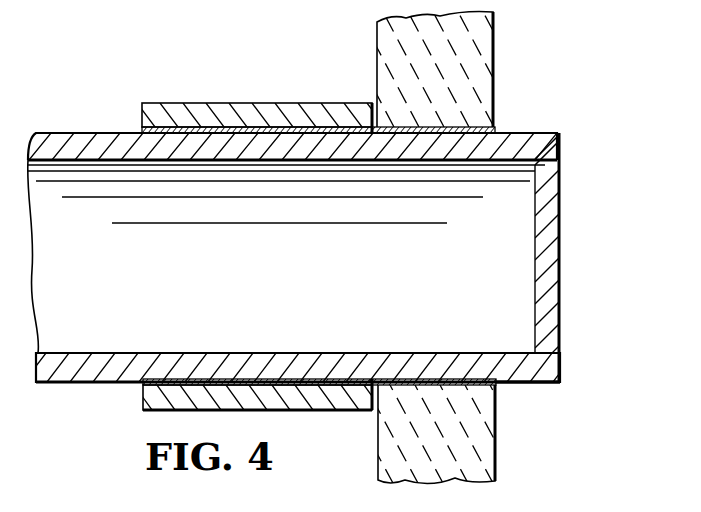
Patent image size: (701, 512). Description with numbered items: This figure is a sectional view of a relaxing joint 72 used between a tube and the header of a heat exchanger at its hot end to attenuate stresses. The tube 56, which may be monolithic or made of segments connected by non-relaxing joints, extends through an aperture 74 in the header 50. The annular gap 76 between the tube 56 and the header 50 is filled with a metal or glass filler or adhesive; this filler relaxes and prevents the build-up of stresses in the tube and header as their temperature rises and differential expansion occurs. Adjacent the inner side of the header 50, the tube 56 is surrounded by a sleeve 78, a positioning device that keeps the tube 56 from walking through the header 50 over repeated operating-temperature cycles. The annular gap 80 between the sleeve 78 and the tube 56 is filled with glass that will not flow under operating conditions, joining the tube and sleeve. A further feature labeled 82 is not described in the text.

The header 50 is at (497, 449).
The tube 56 is at (561, 137).
The relaxing joint 72 is at (351, 71).
The aperture 74 is at (455, 384).
The annular gap 76 is at (498, 387).
The sleeve 78 is at (268, 103).
The annular gap 80 is at (231, 386).
The reference element 82 is at (133, 508).